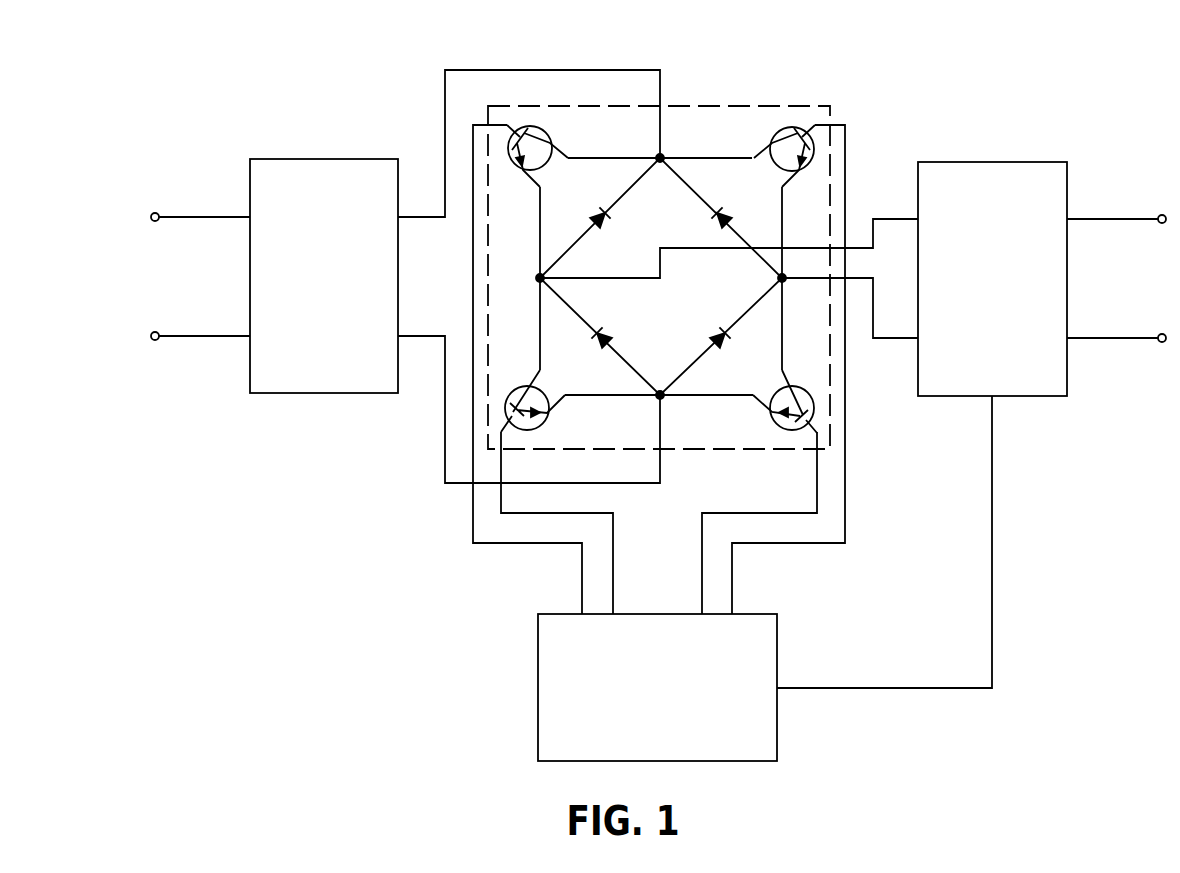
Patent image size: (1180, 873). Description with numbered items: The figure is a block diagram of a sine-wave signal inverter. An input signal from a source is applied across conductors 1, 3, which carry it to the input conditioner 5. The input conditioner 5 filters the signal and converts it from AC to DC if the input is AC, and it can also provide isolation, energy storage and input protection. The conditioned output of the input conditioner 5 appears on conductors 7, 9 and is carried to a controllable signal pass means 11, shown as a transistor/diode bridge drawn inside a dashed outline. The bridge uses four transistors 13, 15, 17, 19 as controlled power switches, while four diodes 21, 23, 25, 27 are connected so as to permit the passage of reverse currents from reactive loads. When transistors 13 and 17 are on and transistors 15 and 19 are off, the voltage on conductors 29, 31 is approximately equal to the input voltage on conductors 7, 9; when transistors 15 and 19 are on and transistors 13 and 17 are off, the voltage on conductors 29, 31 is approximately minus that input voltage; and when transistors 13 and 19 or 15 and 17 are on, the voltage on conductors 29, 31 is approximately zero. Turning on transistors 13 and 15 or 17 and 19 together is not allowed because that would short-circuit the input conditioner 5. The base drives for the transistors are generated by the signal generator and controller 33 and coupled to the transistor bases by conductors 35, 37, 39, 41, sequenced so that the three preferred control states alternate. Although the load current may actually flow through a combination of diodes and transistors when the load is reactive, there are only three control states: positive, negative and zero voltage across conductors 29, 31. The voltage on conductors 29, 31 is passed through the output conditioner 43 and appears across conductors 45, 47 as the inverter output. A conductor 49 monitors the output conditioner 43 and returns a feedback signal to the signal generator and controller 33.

The conductor 1 is at (205, 336).
The conductor 3 is at (205, 217).
The input conditioner 5 is at (322, 159).
The conductor 7 is at (546, 70).
The conductor 9 is at (430, 336).
The controllable signal pass means 11 is at (713, 104).
The transistor 13 is at (552, 141).
The transistor 15 is at (549, 416).
The transistor 17 is at (771, 416).
The transistor 19 is at (770, 141).
The diode 21 is at (600, 218).
The diode 23 is at (600, 338).
The diode 25 is at (718, 338).
The diode 27 is at (718, 218).
The conductor 29 is at (882, 219).
The conductor 31 is at (888, 338).
The signal generator and controller 33 is at (777, 645).
The conductor 35 is at (582, 580).
The conductor 37 is at (613, 550).
The conductor 39 is at (702, 562).
The conductor 41 is at (732, 580).
The output conditioner 43 is at (988, 162).
The conductor 45 is at (1105, 219).
The conductor 47 is at (1105, 338).
The conductor 49 is at (992, 552).